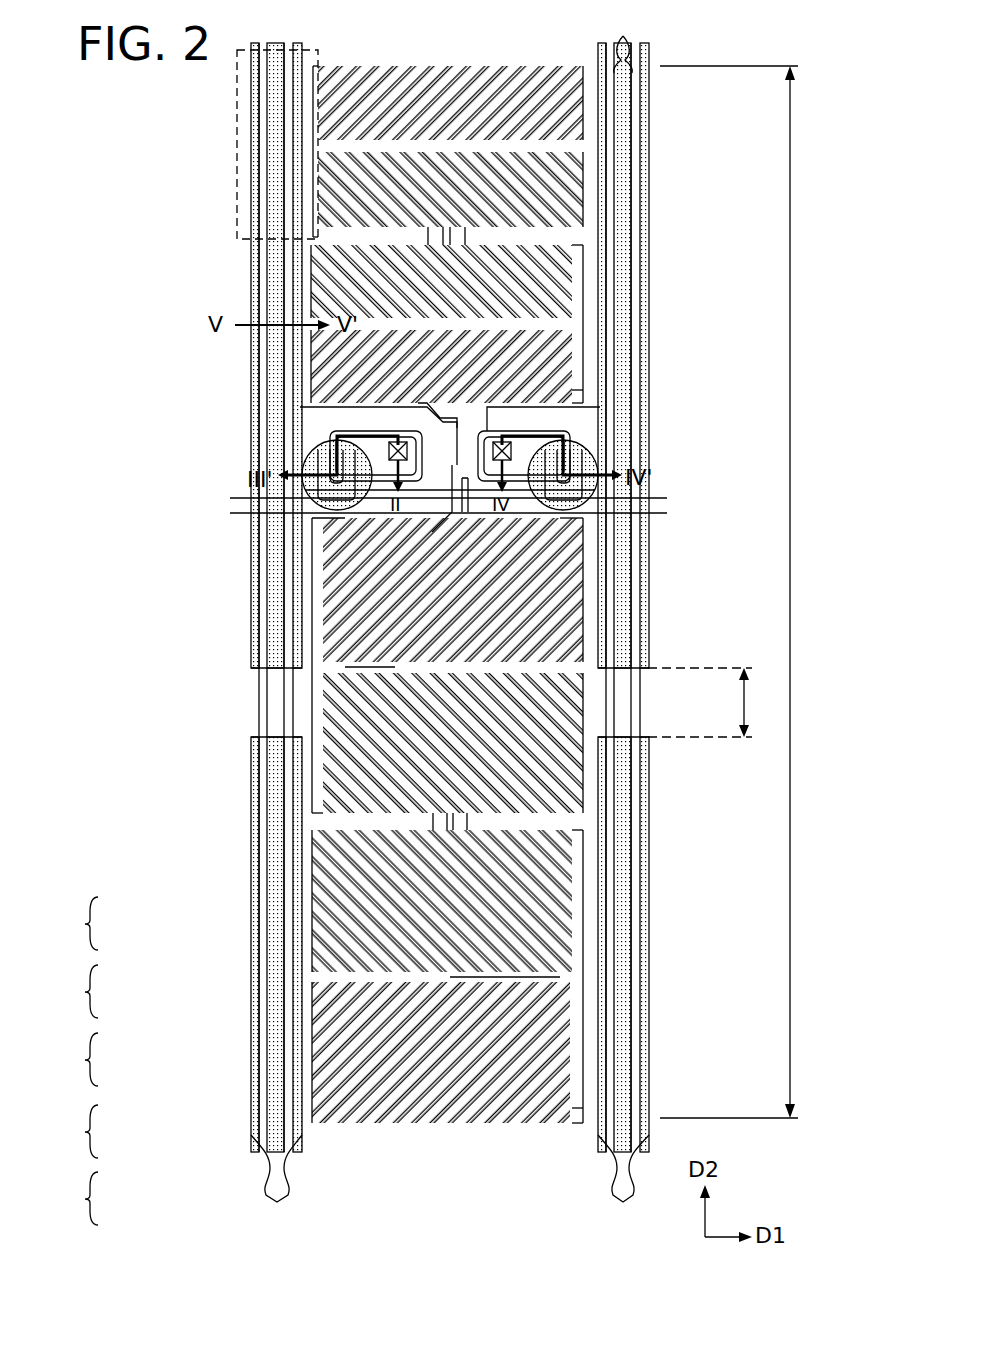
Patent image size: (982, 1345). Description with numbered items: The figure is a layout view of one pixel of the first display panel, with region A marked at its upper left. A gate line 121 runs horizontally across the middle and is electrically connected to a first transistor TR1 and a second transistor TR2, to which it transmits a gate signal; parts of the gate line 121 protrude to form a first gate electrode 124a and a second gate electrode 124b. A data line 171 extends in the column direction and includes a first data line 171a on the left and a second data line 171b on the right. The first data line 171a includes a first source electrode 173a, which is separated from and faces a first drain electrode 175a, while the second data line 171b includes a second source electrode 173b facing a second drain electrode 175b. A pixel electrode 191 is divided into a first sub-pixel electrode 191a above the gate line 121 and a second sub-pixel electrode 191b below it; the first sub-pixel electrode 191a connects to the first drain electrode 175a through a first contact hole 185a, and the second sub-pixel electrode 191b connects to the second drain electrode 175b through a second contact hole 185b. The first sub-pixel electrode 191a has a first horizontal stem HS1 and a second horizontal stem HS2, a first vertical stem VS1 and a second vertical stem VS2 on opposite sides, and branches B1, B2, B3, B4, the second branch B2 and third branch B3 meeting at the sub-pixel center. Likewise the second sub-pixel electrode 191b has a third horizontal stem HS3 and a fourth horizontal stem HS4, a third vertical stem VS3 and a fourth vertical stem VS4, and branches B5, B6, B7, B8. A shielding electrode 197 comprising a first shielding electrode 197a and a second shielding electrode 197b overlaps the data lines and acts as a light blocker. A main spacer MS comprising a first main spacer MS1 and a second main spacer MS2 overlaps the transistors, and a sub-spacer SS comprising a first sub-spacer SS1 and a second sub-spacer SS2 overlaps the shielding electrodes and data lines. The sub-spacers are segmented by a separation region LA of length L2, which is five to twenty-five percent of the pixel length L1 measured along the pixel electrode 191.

The region A is at (280, 48).
The first sub-spacer SS1 is at (236, 640).
The second sub-spacer SS2 is at (661, 624).
The first data line 171a is at (270, 112).
The second data line 171b is at (628, 582).
The first shielding electrode 197a is at (288, 162).
The second shielding electrode 197b is at (625, 118).
The first branch B1 is at (427, 95).
The second branch B2 is at (555, 175).
The third branch B3 is at (520, 265).
The fourth branch B4 is at (540, 350).
The fifth branch B5 is at (520, 596).
The sixth branch B6 is at (365, 772).
The seventh branch B7 is at (520, 868).
The eighth branch B8 is at (525, 1073).
The first vertical stem VS1 is at (318, 72).
The second vertical stem VS2 is at (580, 313).
The third vertical stem VS3 is at (322, 618).
The fourth vertical stem VS4 is at (580, 903).
The first horizontal stem HS1 is at (487, 150).
The second horizontal stem HS2 is at (490, 323).
The third horizontal stem HS3 is at (345, 667).
The fourth horizontal stem HS4 is at (560, 977).
The first contact hole 185a is at (380, 428).
The second contact hole 185b is at (520, 428).
The first sub-pixel electrode 191a is at (586, 385).
The second sub-pixel electrode 191b is at (312, 563).
The first transistor TR1 is at (273, 461).
The second transistor TR2 is at (631, 461).
The first drain electrode 175a is at (335, 440).
The second drain electrode 175b is at (565, 440).
The first gate electrode 124a is at (370, 462).
The second gate electrode 124b is at (530, 462).
The first source electrode 173a is at (310, 492).
The second source electrode 173b is at (590, 492).
The gate line 121 is at (230, 513).
The first main spacer MS1 is at (325, 523).
The second main spacer MS2 is at (585, 520).
The separation region LA is at (228, 705).
The pixel length L1 is at (742, 592).
The length of the separation region L2 is at (715, 702).
The pixel electrode 191 is at (107, 923).
The main spacer MS is at (102, 992).
The sub-spacer SS is at (100, 1059).
The data line 171 is at (107, 1131).
The shielding electrode 197 is at (107, 1199).